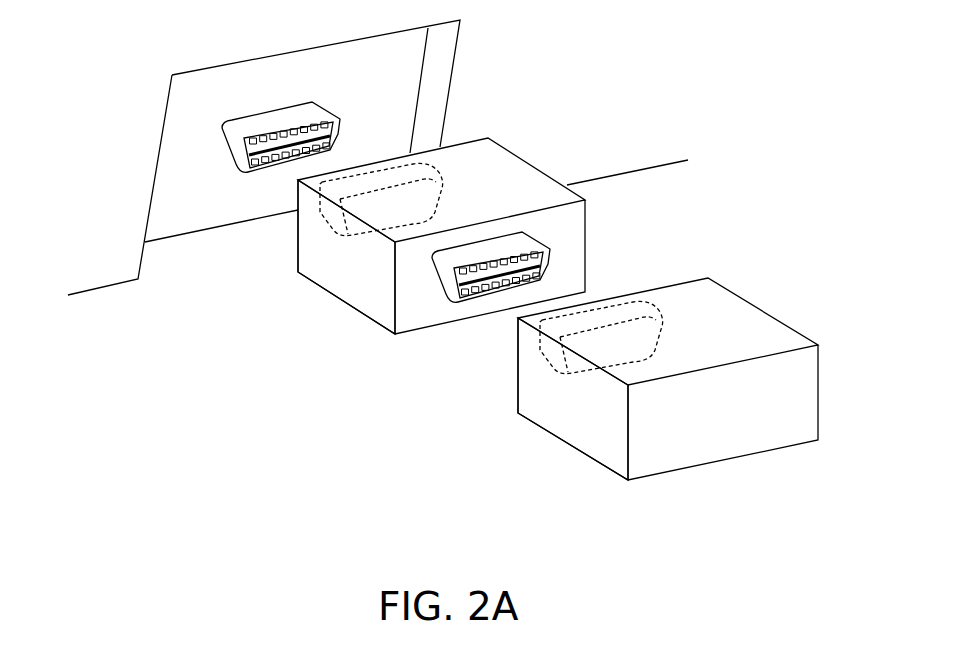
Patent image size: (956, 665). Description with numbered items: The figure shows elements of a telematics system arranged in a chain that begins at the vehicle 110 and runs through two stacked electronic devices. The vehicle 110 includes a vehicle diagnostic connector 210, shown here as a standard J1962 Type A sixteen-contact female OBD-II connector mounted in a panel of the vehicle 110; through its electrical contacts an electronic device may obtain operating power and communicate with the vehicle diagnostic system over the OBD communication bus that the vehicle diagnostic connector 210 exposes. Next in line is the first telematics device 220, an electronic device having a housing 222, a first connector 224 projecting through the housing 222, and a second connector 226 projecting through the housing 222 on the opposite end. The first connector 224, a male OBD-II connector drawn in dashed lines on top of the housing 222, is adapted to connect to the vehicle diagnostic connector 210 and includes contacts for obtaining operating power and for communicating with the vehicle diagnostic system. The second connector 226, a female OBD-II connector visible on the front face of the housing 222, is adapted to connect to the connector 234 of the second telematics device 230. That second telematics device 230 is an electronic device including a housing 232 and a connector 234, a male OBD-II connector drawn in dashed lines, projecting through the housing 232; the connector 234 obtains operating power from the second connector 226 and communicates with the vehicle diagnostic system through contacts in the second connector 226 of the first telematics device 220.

The vehicle 110 is at (217, 215).
The vehicle diagnostic connector 210 is at (267, 118).
The first telematics device 220 is at (429, 240).
The housing 222 is at (370, 297).
The first connector 224 is at (355, 225).
The second connector 226 is at (447, 287).
The second telematics device 230 is at (657, 383).
The housing 232 is at (603, 442).
The connector 234 is at (578, 367).